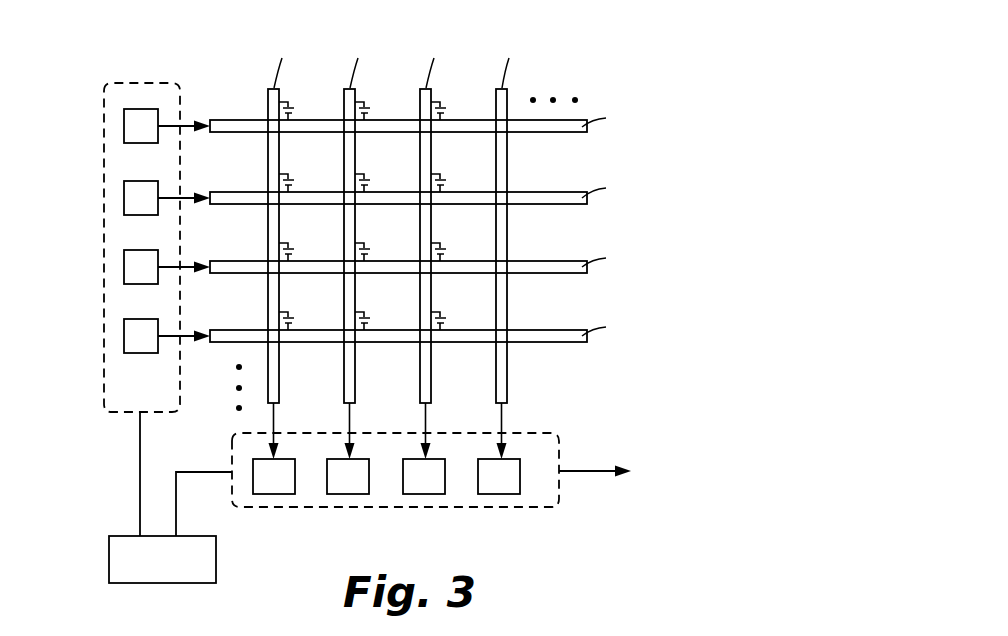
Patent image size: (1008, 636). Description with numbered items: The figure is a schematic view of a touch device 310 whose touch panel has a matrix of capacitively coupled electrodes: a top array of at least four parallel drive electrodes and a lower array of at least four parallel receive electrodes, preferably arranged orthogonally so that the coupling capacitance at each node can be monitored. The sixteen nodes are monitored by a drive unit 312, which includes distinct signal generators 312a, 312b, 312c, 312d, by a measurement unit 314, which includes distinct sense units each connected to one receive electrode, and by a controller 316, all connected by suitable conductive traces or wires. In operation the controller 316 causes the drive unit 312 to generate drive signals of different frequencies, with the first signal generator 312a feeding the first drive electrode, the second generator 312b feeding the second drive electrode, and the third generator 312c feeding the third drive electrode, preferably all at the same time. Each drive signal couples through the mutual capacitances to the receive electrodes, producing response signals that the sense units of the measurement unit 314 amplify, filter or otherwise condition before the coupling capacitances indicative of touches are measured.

The touch device 310 is at (613, 45).
The drive unit 312 is at (138, 82).
The signal generator 312a is at (140, 126).
The signal generator 312b is at (140, 198).
The signal generator 312c is at (140, 267).
The signal generator 312d is at (140, 336).
The measurement unit 314 is at (542, 508).
The controller 316 is at (141, 570).